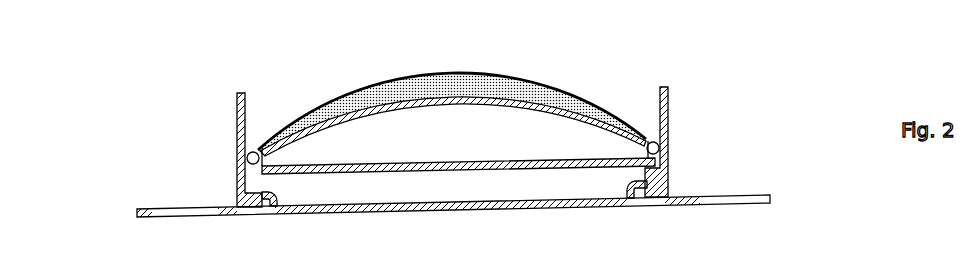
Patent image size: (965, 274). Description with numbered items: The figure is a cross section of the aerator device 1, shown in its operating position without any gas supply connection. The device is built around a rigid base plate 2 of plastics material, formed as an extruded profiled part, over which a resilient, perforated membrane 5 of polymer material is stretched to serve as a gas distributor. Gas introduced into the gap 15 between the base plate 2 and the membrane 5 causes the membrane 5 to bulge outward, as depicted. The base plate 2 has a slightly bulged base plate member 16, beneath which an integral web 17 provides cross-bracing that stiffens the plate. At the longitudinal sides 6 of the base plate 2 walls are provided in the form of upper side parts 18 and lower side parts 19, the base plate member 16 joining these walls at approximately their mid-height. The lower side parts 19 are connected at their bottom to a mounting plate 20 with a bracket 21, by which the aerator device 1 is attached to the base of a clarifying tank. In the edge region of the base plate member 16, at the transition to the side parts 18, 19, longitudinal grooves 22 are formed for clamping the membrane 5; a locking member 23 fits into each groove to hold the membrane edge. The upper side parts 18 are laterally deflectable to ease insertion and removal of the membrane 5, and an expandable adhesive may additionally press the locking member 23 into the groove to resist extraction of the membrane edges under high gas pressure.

The aerator device 1 is at (714, 74).
The base plate 2 is at (537, 110).
The membrane 5 is at (452, 83).
The longitudinal sides 6 is at (240, 150).
The gap 15 is at (381, 86).
The base plate member 16 is at (330, 104).
The web 17 is at (594, 160).
The upper side parts 18 is at (236, 99).
The lower side parts 19 is at (240, 188).
The mounting plate 20 is at (465, 216).
The bracket 21 is at (142, 209).
The longitudinal grooves 22 is at (667, 157).
The locking member 23 is at (663, 148).